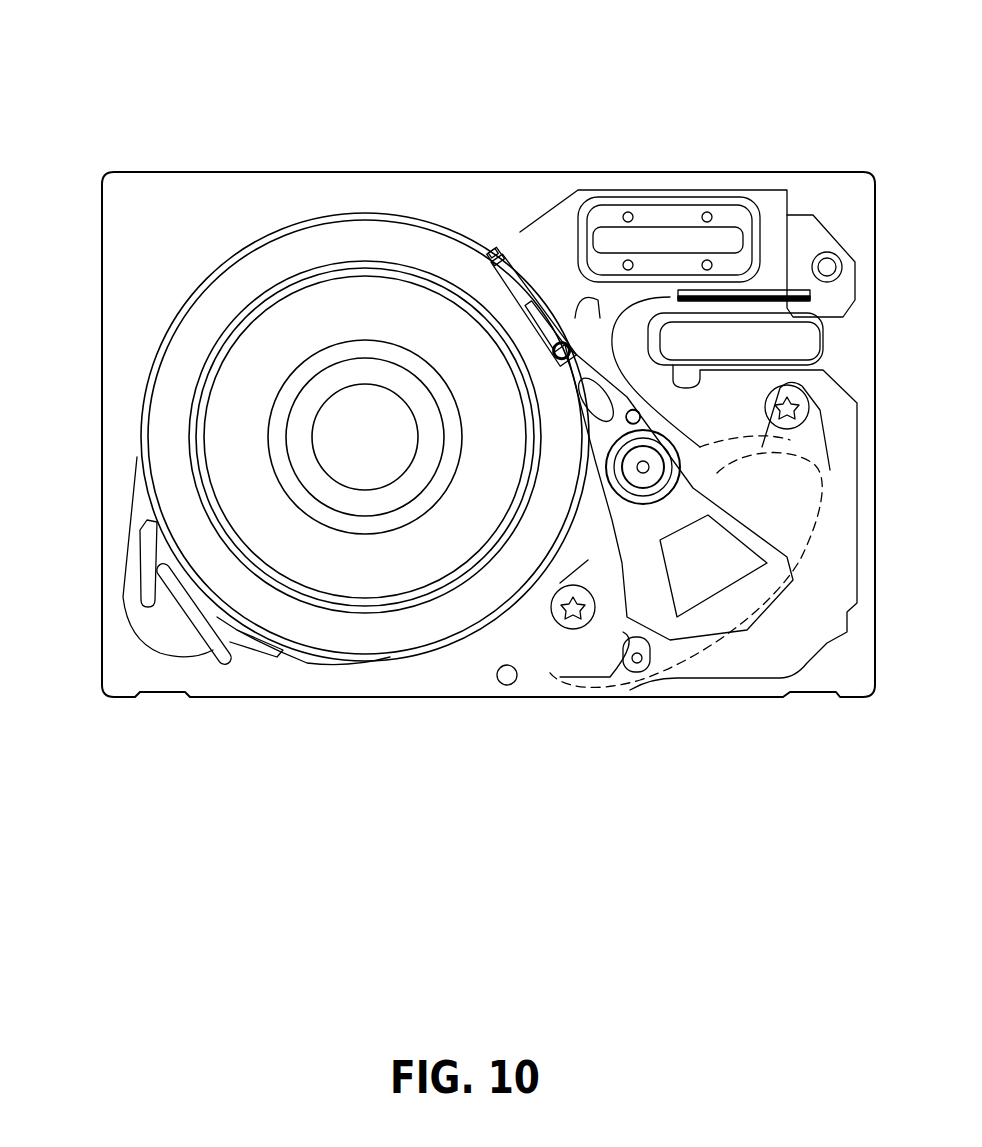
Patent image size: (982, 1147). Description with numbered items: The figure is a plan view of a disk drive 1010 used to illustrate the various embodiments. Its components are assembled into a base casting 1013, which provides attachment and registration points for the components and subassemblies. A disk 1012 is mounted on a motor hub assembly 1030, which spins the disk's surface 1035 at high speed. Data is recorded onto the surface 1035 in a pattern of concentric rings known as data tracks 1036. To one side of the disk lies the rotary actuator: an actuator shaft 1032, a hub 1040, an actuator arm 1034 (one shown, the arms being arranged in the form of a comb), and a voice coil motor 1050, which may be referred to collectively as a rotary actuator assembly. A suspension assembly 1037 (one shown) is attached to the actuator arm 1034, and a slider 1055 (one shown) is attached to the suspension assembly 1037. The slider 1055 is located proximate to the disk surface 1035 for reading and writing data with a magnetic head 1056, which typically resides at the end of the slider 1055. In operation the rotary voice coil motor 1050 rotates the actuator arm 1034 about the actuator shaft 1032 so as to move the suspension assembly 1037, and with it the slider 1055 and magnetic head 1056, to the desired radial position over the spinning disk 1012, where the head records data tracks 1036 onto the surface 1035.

The disk drive 1010 is at (186, 102).
The disk 1012 is at (238, 260).
The base casting 1013 is at (122, 388).
The motor hub assembly 1030 is at (367, 437).
The actuator shaft 1032 is at (643, 470).
The actuator arm 1034 is at (588, 460).
The disk surface 1035 is at (296, 260).
The data tracks 1036 is at (197, 492).
The suspension assembly 1037 is at (525, 257).
The hub 1040 is at (636, 478).
The voice coil motor 1050 is at (712, 640).
The slider 1055 is at (505, 255).
The magnetic head 1056 is at (493, 257).